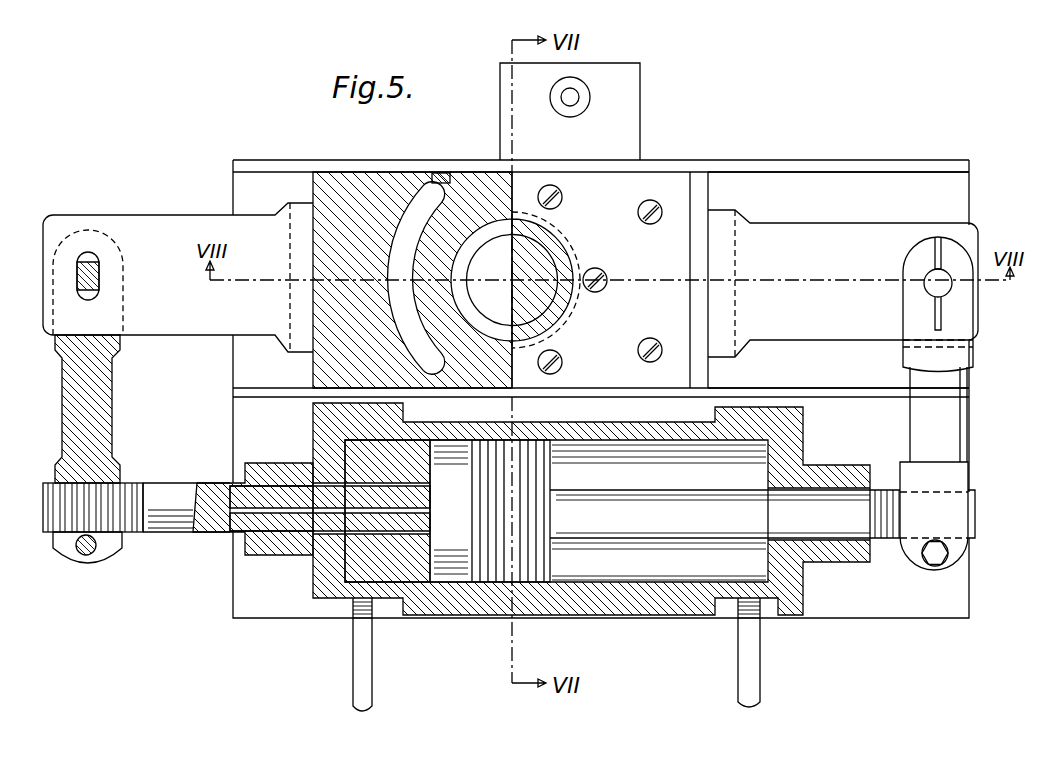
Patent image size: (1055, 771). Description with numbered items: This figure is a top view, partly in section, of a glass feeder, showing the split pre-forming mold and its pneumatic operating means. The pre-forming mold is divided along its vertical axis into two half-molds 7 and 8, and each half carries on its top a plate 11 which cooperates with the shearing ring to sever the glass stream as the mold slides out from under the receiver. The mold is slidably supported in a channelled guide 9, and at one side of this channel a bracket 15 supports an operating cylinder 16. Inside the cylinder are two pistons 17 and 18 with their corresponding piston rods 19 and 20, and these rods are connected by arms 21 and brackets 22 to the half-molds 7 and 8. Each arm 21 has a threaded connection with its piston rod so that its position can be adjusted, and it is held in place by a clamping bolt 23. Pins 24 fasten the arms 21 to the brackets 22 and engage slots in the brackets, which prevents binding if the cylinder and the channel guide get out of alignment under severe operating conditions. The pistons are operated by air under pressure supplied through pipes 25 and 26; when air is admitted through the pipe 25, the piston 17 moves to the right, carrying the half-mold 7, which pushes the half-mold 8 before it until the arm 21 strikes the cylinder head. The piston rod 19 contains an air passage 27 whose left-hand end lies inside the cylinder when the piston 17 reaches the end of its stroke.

The half mold 7 is at (350, 182).
The half mold 8 is at (700, 187).
The channelled guide 9 is at (770, 188).
The plate 11 is at (587, 280).
The bracket 15 is at (591, 509).
The operating cylinder 16 is at (659, 512).
The piston 17 is at (425, 549).
The piston 18 is at (533, 556).
The piston rod 19 is at (176, 529).
The piston rod 20 is at (722, 527).
The arm 21 is at (70, 425).
The bracket 22 is at (510, 280).
The clamping bolt 23 is at (86, 556).
The pin 24 is at (77, 278).
The pipe 25 is at (366, 669).
The pipe 26 is at (740, 669).
The air passage 27 is at (228, 490).